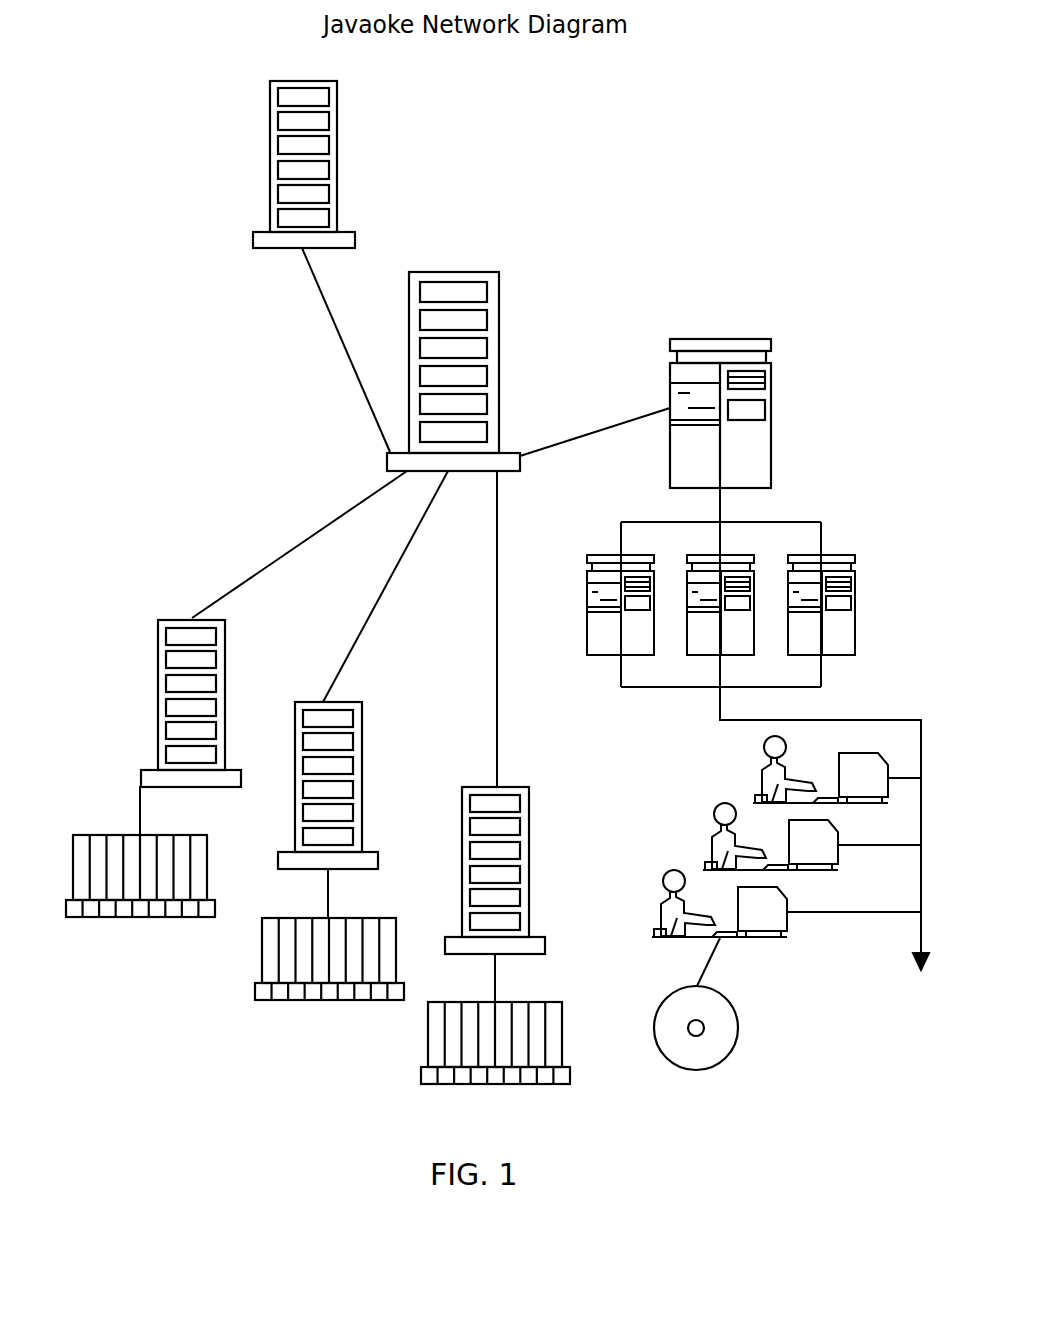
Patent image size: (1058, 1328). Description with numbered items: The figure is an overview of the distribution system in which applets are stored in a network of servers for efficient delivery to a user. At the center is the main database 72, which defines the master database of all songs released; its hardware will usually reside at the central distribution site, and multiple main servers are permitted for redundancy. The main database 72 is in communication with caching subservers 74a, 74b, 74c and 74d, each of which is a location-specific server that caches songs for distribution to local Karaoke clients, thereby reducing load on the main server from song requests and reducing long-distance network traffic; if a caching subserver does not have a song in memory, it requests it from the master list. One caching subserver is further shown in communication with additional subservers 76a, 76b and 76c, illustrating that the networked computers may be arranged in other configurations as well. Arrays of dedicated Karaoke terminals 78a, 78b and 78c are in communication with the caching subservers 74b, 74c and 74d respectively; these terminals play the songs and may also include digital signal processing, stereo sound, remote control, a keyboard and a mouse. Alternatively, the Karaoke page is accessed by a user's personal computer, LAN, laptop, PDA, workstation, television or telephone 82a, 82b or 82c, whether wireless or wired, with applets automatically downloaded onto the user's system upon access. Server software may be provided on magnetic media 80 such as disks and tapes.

The main database 72 is at (455, 271).
The caching subserver 74a is at (352, 123).
The caching subserver 74b is at (175, 619).
The caching subserver 74c is at (720, 339).
The caching subserver 74d is at (511, 787).
The subserver 76a is at (638, 555).
The subserver 76b is at (738, 555).
The subserver 76c is at (839, 555).
The dedicated Karaoke terminals 78a is at (207, 885).
The dedicated Karaoke terminals 78b is at (395, 970).
The dedicated Karaoke terminals 78c is at (562, 1052).
The magnetic media 80 is at (737, 1027).
The user's personal computer, LAN, laptop, PDA, workstation, television or telephone 82a is at (862, 805).
The user's personal computer, LAN, laptop, PDA, workstation, television or telephone 82b is at (812, 872).
The user's personal computer, LAN, laptop, PDA, workstation, television or telephone 82c is at (762, 939).